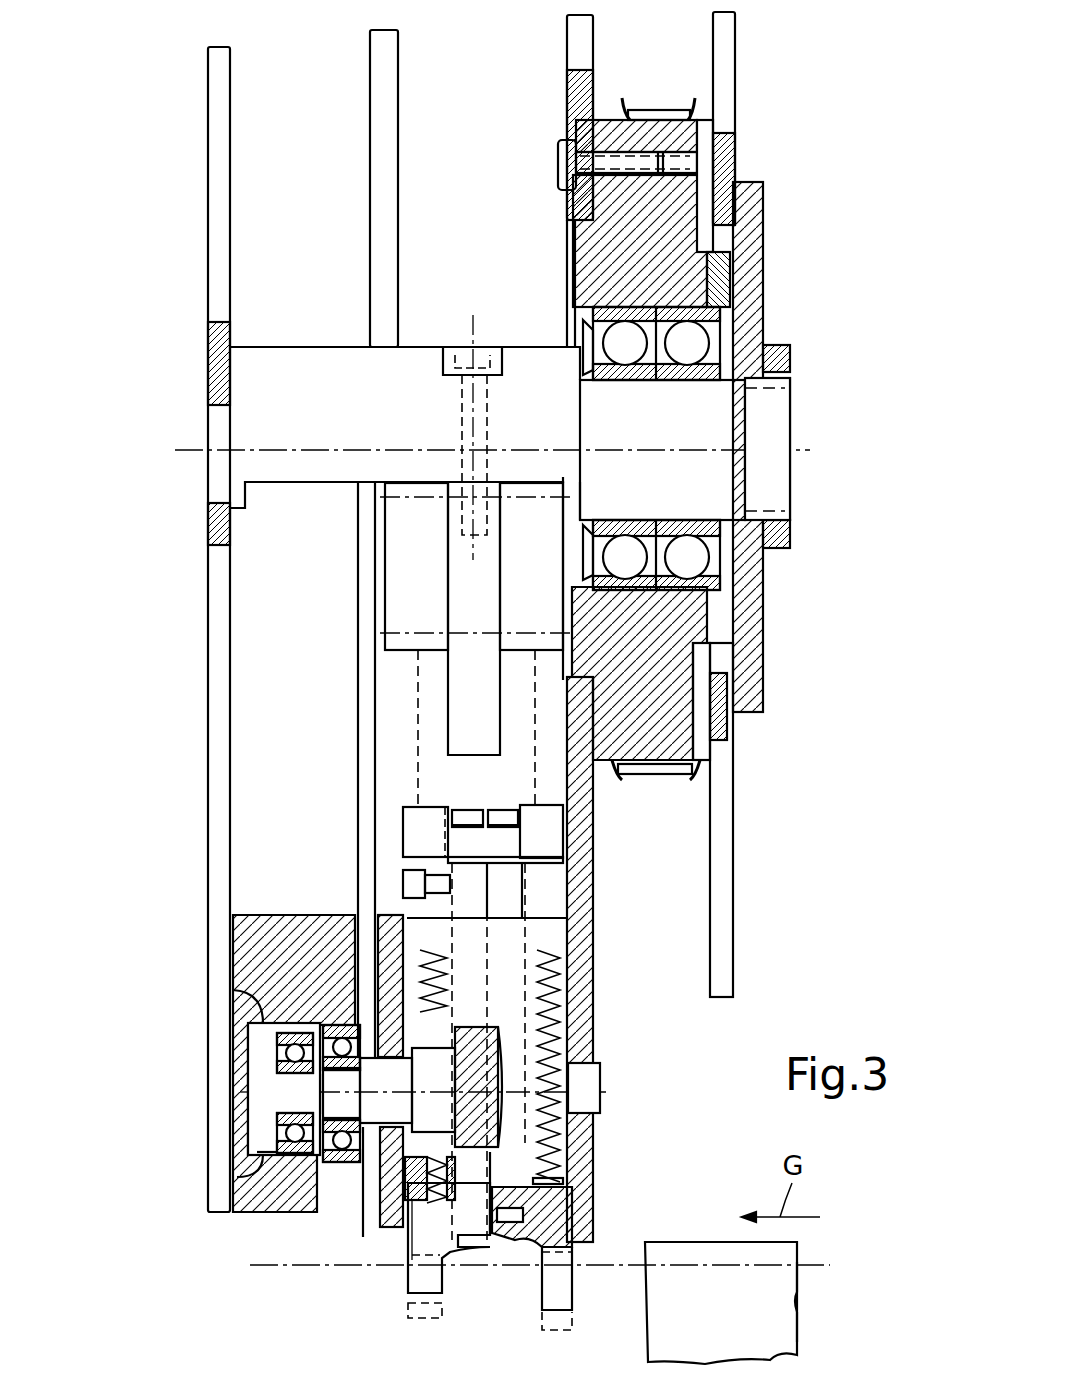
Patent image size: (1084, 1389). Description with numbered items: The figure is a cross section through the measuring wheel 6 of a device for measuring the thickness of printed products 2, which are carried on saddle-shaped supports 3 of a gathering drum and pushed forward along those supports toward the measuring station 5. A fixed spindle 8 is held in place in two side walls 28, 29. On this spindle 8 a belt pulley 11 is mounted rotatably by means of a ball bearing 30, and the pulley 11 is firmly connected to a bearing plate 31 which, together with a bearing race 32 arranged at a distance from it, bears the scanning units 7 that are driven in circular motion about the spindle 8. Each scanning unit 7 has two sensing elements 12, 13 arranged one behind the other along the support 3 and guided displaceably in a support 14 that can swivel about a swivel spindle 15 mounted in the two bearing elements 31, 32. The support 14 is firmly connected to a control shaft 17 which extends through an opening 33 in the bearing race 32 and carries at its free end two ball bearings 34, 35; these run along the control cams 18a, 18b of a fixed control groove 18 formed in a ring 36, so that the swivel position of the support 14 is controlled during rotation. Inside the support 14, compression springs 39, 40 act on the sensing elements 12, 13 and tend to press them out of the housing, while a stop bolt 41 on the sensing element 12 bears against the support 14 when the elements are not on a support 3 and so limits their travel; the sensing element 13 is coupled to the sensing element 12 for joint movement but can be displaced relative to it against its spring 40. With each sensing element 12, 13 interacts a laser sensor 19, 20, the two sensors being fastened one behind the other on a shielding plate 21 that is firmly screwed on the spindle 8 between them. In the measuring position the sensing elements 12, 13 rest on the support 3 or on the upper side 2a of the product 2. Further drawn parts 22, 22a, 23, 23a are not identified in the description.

The printed product 2 is at (705, 1317).
The upper side of the printing product 2a is at (790, 1292).
The saddle-shaped support 3 is at (278, 1272).
The measuring station 5 is at (658, 1169).
The measuring wheel 6 is at (770, 84).
The scanning unit 7 is at (544, 918).
The fixed spindle 8 is at (275, 360).
The belt pulley 11 is at (652, 130).
The sensing element 12 is at (405, 1245).
The sensing element 13 is at (572, 1285).
The support 14 is at (560, 947).
The swivel spindle 15 is at (585, 1078).
The control shaft 17 is at (373, 1115).
The control groove 18 is at (255, 1040).
The control cam 18a is at (248, 988).
The control cam 18b is at (235, 1178).
The laser sensor 19 is at (425, 572).
The laser sensor 20 is at (542, 572).
The shielding plate 21 is at (457, 683).
The slide block 22 is at (418, 826).
The slide block face 22a is at (415, 803).
The stop element 23 is at (517, 797).
The stop block 23a is at (545, 803).
The side wall 28 is at (208, 184).
The side wall 29 is at (730, 118).
The ball bearing 30 is at (737, 321).
The bearing plate 31 is at (573, 100).
The bearing race 32 is at (398, 182).
The opening 33 is at (377, 1150).
The ball bearing 34 is at (328, 1023).
The ball bearing 35 is at (265, 1150).
The ring 36 is at (243, 935).
The compression spring 39 is at (397, 917).
The compression spring 40 is at (598, 1133).
The stop bolt 41 is at (405, 880).